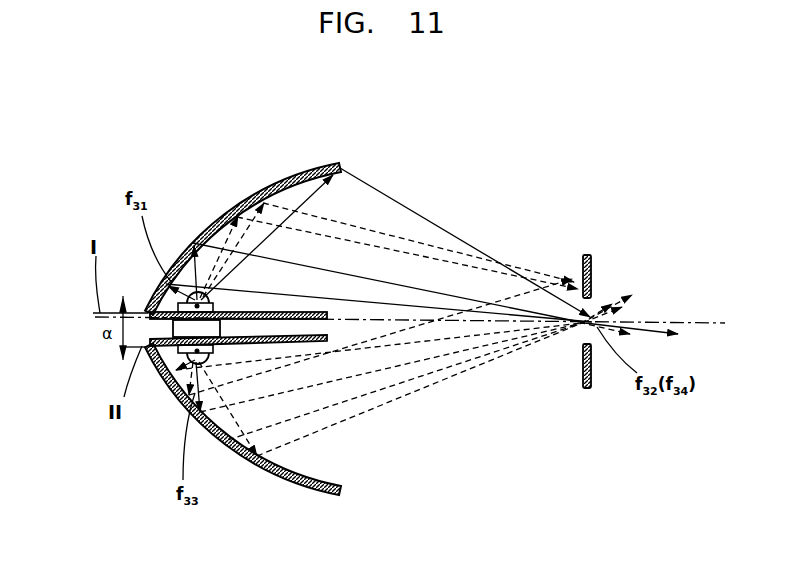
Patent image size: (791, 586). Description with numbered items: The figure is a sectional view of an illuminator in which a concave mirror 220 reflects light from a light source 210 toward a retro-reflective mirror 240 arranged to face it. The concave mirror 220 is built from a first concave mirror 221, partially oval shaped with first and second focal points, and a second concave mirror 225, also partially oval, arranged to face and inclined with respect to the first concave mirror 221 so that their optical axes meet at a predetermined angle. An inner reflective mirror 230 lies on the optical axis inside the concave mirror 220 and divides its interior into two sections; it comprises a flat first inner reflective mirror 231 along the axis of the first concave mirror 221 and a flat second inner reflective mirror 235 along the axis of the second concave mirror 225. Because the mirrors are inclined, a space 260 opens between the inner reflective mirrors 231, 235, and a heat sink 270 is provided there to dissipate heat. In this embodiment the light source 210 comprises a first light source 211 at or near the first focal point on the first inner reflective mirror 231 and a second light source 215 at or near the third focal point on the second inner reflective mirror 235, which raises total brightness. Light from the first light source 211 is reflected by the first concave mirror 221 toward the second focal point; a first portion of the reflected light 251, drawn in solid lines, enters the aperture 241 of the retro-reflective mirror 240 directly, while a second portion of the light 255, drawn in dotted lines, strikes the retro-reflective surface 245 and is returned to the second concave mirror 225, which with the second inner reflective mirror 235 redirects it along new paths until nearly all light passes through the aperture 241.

The concave mirror 220 is at (320, 131).
The first concave mirror 221 is at (268, 182).
The second concave mirror 225 is at (289, 480).
The first light source 211 is at (202, 290).
The heat sink 270 is at (180, 303).
The space 260 is at (154, 328).
The second light source 215 is at (213, 363).
The light source 210 is at (167, 382).
The inner reflective mirror 230 is at (482, 428).
The first inner reflective mirror 231 is at (330, 322).
The second inner reflective mirror 235 is at (300, 341).
The first portion of the reflected light 251 is at (412, 210).
The second portion of the light 255 is at (440, 250).
The retro-reflective mirror 240 is at (606, 393).
The retro-reflective surface 245 is at (590, 253).
The aperture 241 is at (594, 298).